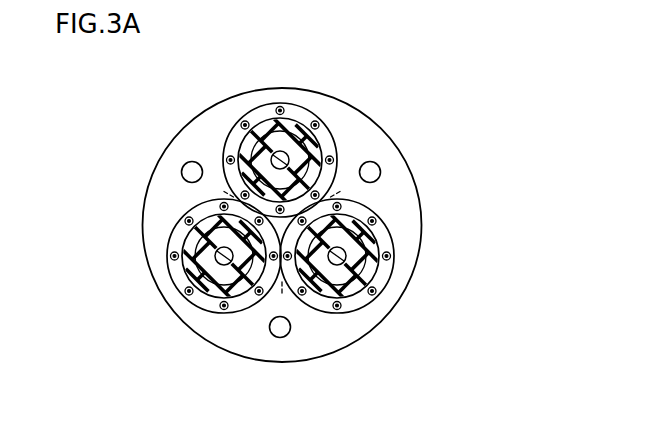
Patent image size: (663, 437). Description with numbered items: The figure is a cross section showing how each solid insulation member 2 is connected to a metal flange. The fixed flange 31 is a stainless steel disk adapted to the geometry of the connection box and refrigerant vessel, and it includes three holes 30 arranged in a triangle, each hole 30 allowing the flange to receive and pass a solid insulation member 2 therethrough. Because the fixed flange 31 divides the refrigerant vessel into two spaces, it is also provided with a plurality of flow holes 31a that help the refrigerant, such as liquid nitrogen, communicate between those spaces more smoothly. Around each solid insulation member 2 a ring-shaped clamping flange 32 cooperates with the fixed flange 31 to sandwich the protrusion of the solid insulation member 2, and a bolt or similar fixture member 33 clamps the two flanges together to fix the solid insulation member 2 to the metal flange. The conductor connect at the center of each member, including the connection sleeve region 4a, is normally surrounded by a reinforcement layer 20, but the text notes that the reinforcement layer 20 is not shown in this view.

The solid insulation member 2 is at (270, 145).
The output shaft 4a is at (283, 148).
The reinforcement layer 20 is at (236, 148).
The hole 30 is at (238, 150).
The fixed flange 31 is at (360, 132).
The flow hole 31a is at (181, 171).
The clamping flange 32 is at (325, 140).
The fixture member 33 is at (247, 138).